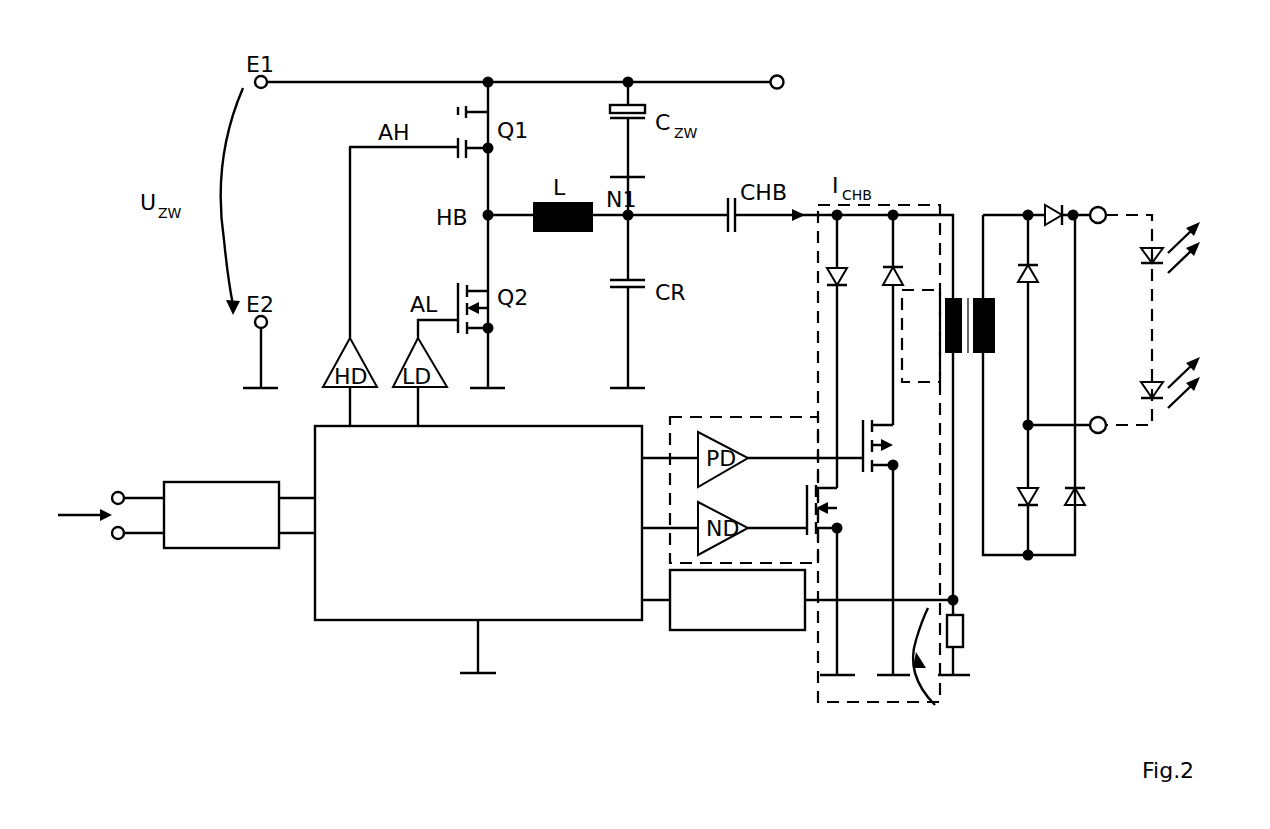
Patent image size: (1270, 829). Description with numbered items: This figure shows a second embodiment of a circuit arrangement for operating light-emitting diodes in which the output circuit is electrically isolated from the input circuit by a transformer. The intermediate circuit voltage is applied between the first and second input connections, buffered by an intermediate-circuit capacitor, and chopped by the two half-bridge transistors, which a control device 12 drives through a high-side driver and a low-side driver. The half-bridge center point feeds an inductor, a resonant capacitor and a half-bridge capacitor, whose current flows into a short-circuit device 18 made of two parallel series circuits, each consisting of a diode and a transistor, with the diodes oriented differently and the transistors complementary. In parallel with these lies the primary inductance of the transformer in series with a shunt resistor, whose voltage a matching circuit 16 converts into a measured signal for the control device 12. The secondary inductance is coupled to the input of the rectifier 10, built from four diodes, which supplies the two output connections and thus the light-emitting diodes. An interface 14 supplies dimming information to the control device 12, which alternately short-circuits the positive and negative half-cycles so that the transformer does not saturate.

The rectifier 10 is at (1036, 138).
The control device 12 is at (355, 607).
The interface 14 is at (227, 540).
The matching circuit 16 is at (708, 613).
The short-circuit device 18 is at (920, 205).